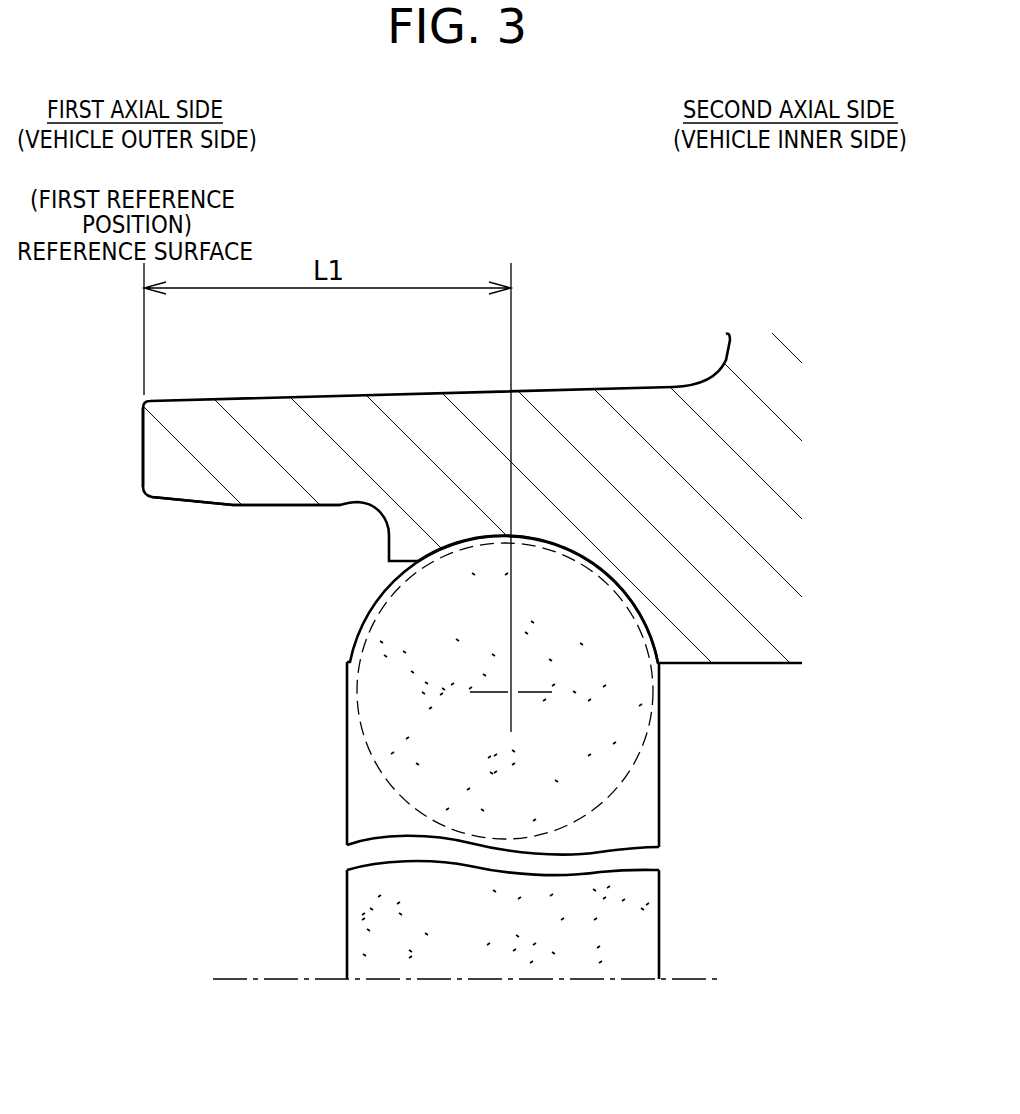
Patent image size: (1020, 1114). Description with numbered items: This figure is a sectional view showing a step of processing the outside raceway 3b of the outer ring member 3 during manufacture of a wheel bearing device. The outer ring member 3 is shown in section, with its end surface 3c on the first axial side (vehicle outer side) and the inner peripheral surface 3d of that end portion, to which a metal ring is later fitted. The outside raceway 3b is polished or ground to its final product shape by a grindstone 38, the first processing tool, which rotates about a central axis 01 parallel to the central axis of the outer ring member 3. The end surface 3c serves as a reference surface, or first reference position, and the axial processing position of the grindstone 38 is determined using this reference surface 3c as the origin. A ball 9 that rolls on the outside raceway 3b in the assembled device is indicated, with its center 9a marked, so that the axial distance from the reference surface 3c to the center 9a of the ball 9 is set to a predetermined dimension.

The outer ring member 3 is at (573, 390).
The outside raceway 3b is at (588, 560).
The end surface (reference surface) 3c is at (143, 445).
The inner peripheral surface 3d is at (278, 507).
The ball 9 is at (347, 662).
The center of the ball 9a is at (507, 692).
The grindstone (first processing tool) 38 is at (372, 805).
The central axis 01 is at (248, 979).